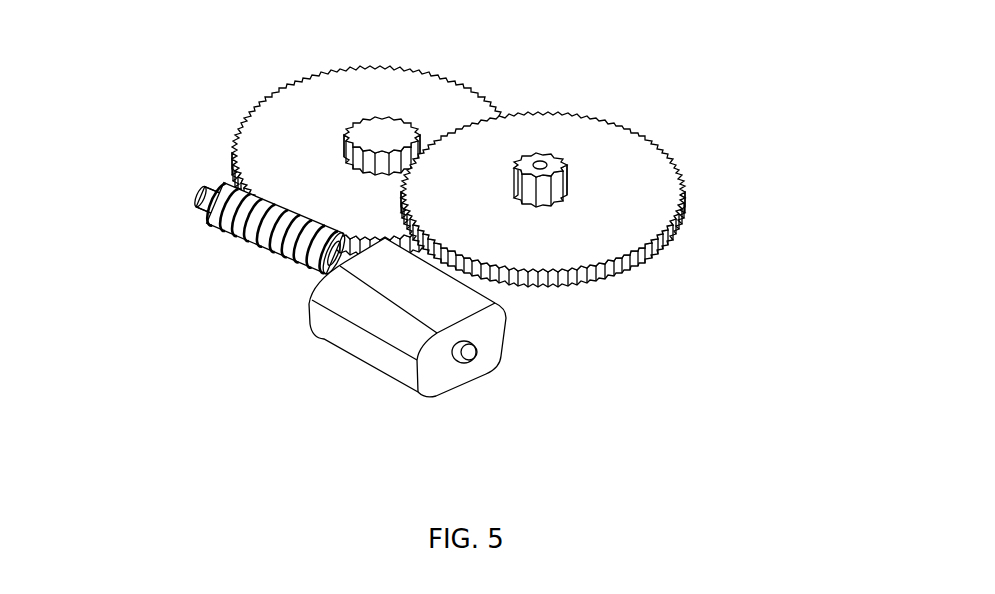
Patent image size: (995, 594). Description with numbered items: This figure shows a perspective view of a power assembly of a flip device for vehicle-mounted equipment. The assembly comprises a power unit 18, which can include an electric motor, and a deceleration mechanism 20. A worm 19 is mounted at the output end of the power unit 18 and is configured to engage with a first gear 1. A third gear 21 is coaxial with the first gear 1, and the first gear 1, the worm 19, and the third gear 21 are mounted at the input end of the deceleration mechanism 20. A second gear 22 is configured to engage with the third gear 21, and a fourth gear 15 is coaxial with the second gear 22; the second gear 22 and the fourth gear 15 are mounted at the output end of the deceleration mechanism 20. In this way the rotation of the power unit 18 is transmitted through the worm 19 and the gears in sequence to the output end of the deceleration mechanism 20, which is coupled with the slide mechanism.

The first gear 1 is at (313, 193).
The fourth gear 15 is at (570, 180).
The power unit 18 is at (375, 323).
The worm 19 is at (237, 243).
The deceleration mechanism 20 is at (543, 300).
The third gear 21 is at (377, 138).
The second gear 22 is at (533, 248).